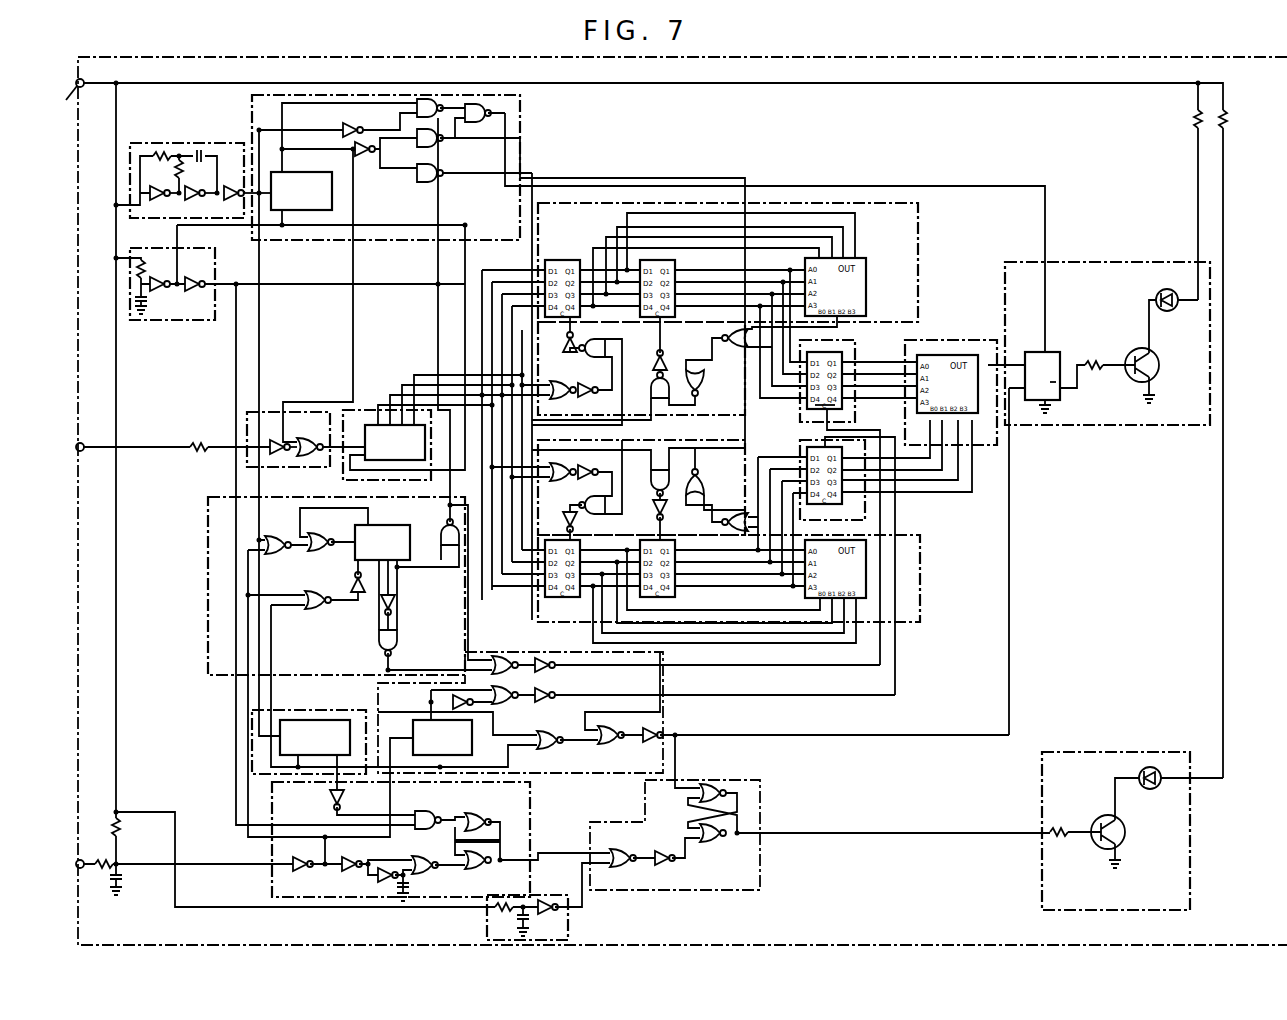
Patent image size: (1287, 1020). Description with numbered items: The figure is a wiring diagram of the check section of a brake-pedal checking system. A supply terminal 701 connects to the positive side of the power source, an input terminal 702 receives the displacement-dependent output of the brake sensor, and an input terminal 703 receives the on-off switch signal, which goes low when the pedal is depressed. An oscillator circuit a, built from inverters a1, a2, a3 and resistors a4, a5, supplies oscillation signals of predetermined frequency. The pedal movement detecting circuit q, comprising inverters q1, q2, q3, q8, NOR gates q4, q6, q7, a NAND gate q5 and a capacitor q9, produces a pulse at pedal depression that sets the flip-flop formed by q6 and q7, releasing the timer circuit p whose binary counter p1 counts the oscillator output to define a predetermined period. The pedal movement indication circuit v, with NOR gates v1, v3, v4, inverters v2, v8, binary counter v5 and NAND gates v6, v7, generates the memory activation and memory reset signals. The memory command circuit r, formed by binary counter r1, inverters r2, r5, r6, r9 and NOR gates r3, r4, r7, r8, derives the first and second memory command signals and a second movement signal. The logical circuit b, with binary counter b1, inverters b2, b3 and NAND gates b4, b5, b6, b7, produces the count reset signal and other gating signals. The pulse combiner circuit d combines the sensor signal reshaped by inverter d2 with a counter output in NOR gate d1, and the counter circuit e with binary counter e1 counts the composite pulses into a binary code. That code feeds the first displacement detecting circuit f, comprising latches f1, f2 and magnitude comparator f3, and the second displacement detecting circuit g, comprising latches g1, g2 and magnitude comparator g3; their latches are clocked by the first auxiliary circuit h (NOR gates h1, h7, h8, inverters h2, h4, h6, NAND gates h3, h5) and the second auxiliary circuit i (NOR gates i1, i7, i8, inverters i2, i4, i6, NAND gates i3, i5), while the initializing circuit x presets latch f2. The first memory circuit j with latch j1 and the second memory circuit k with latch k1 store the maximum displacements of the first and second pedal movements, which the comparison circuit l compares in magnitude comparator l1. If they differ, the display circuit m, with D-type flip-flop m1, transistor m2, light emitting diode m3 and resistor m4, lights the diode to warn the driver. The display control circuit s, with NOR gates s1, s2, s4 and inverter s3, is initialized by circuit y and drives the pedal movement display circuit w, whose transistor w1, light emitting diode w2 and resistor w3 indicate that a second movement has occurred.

The supply terminal 701 is at (57, 100).
The input terminal 702 is at (77, 450).
The input terminal 703 is at (77, 867).
The oscillator circuit a is at (210, 145).
The inverter a1 is at (140, 198).
The inverter a2 is at (200, 198).
The inverter a3 is at (235, 188).
The resistor a4 is at (161, 152).
The resistor a5 is at (210, 150).
The logical circuit b is at (520, 108).
The binary counter b1 is at (335, 190).
The inverter b2 is at (352, 122).
The inverter b3 is at (368, 158).
The NAND gate b4 is at (435, 100).
The NAND gate b5 is at (445, 143).
The NAND gate b6 is at (432, 183).
The NAND gate b7 is at (485, 104).
The initializing circuit x is at (196, 327).
The second displacement detecting circuit g is at (920, 215).
The latch g1 is at (566, 258).
The latch g2 is at (676, 262).
The magnitude comparator g3 is at (866, 282).
The second auxiliary circuit i is at (748, 400).
The NOR gate i1 is at (562, 398).
The inverter i2 is at (592, 396).
The NAND gate i3 is at (607, 343).
The inverter i4 is at (565, 345).
The NAND gate i5 is at (652, 390).
The inverter i6 is at (665, 352).
The NOR gate i7 is at (705, 390).
The NOR gate i8 is at (735, 345).
The second memory circuit k is at (862, 340).
The latch k1 is at (842, 408).
The comparison circuit l is at (950, 340).
The magnitude comparator l1 is at (982, 420).
The display circuit m is at (1135, 262).
The D-type flip-flop m1 is at (1060, 352).
The transistor m2 is at (1157, 372).
The light emitting diode m3 is at (1175, 310).
The resistor m4 is at (1098, 360).
The pulse combiner circuit d is at (272, 412).
The NOR gate d1 is at (312, 438).
The inverter d2 is at (276, 452).
The counter circuit e is at (343, 470).
The binary counter e1 is at (365, 455).
The first auxiliary circuit h is at (752, 455).
The NOR gate h1 is at (565, 465).
The inverter h2 is at (598, 476).
The NAND gate h3 is at (600, 510).
The inverter h4 is at (568, 515).
The NAND gate h5 is at (652, 476).
The inverter h6 is at (666, 512).
The NOR gate h7 is at (705, 478).
The NOR gate h8 is at (735, 512).
The first memory circuit j is at (865, 510).
The latch j1 is at (842, 500).
The first displacement detecting circuit f is at (920, 548).
The latch f1 is at (562, 597).
The latch f2 is at (676, 595).
The magnitude comparator f3 is at (866, 594).
The pedal movement indication circuit v is at (208, 560).
The NOR gate v1 is at (318, 609).
The inverter v2 is at (352, 580).
The NOR gate v3 is at (282, 555).
The NOR gate v4 is at (322, 551).
The binary counter v5 is at (410, 527).
The NAND gate v6 is at (397, 642).
The NAND gate v7 is at (441, 540).
The inverter v8 is at (395, 605).
The memory command circuit r is at (663, 712).
The binary counter r1 is at (472, 738).
The inverter r2 is at (440, 700).
The NOR gate r3 is at (498, 688).
The NOR gate r4 is at (498, 656).
The inverter r5 is at (542, 688).
The inverter r6 is at (540, 658).
The NOR gate r7 is at (555, 745).
The NOR gate r8 is at (617, 743).
The inverter r9 is at (650, 742).
The timer circuit p is at (320, 710).
The binary counter p1 is at (340, 720).
The pedal movement detecting circuit q is at (272, 870).
The inverter q1 is at (300, 870).
The inverter q2 is at (350, 870).
The inverter q3 is at (382, 880).
The NOR gate q4 is at (425, 873).
The NAND gate q5 is at (432, 813).
The NOR gate q6 is at (478, 814).
The NOR gate q7 is at (485, 866).
The inverter q8 is at (342, 804).
The capacitor q9 is at (405, 890).
The initializing circuit y is at (568, 912).
The display control circuit s is at (760, 825).
The NOR gate s1 is at (718, 785).
The NOR gate s2 is at (718, 845).
The inverter s3 is at (665, 862).
The NOR gate s4 is at (622, 866).
The pedal movement display circuit w is at (1190, 765).
The transistor w1 is at (1100, 845).
The light emitting diode w2 is at (1145, 790).
The resistor w3 is at (1062, 828).